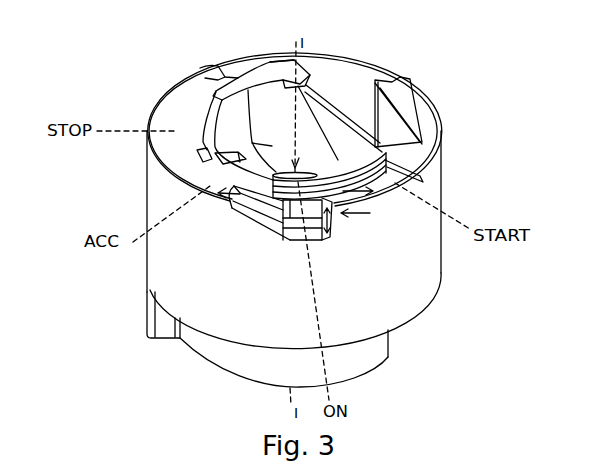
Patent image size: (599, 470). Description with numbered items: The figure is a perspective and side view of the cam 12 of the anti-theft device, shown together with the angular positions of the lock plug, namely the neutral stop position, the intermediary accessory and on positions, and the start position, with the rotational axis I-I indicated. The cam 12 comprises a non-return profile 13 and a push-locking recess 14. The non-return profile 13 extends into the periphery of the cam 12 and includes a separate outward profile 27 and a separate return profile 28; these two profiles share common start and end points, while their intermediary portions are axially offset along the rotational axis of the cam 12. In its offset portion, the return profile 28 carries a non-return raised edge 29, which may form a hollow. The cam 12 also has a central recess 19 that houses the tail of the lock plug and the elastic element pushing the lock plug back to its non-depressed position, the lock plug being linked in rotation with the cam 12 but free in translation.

The cam 12 is at (470, 105).
The non-return profile 13 is at (255, 232).
The push-locking recess 14 is at (181, 80).
The central recess 19 is at (305, 134).
The outward profile 27 is at (340, 152).
The return profile 28 is at (352, 218).
The non-return raised edge 29 is at (320, 241).